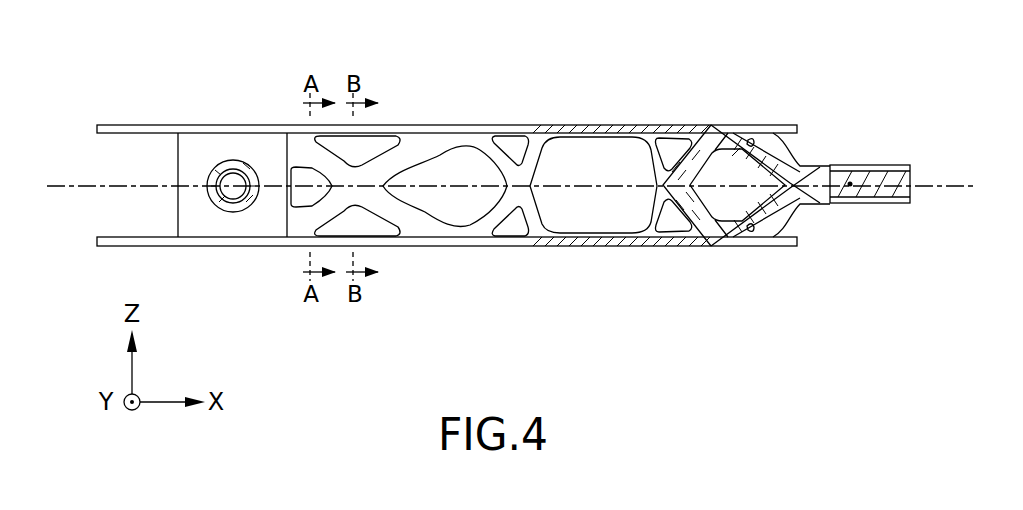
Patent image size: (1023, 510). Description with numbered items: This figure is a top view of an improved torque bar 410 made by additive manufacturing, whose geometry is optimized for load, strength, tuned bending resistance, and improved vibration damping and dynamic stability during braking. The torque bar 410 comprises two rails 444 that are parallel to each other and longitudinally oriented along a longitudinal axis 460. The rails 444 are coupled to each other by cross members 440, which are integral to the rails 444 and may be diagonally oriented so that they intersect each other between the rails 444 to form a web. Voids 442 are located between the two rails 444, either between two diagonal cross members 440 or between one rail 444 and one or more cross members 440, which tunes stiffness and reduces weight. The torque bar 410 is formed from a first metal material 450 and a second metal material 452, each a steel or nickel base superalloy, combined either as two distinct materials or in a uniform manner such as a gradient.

The torque bar 410 is at (498, 108).
The cross member 440 is at (500, 217).
The void 442 is at (605, 147).
The rail 444 is at (447, 137).
The first metal material 450 is at (233, 162).
The second metal material 452 is at (685, 242).
The longitudinal axis 460 is at (943, 184).